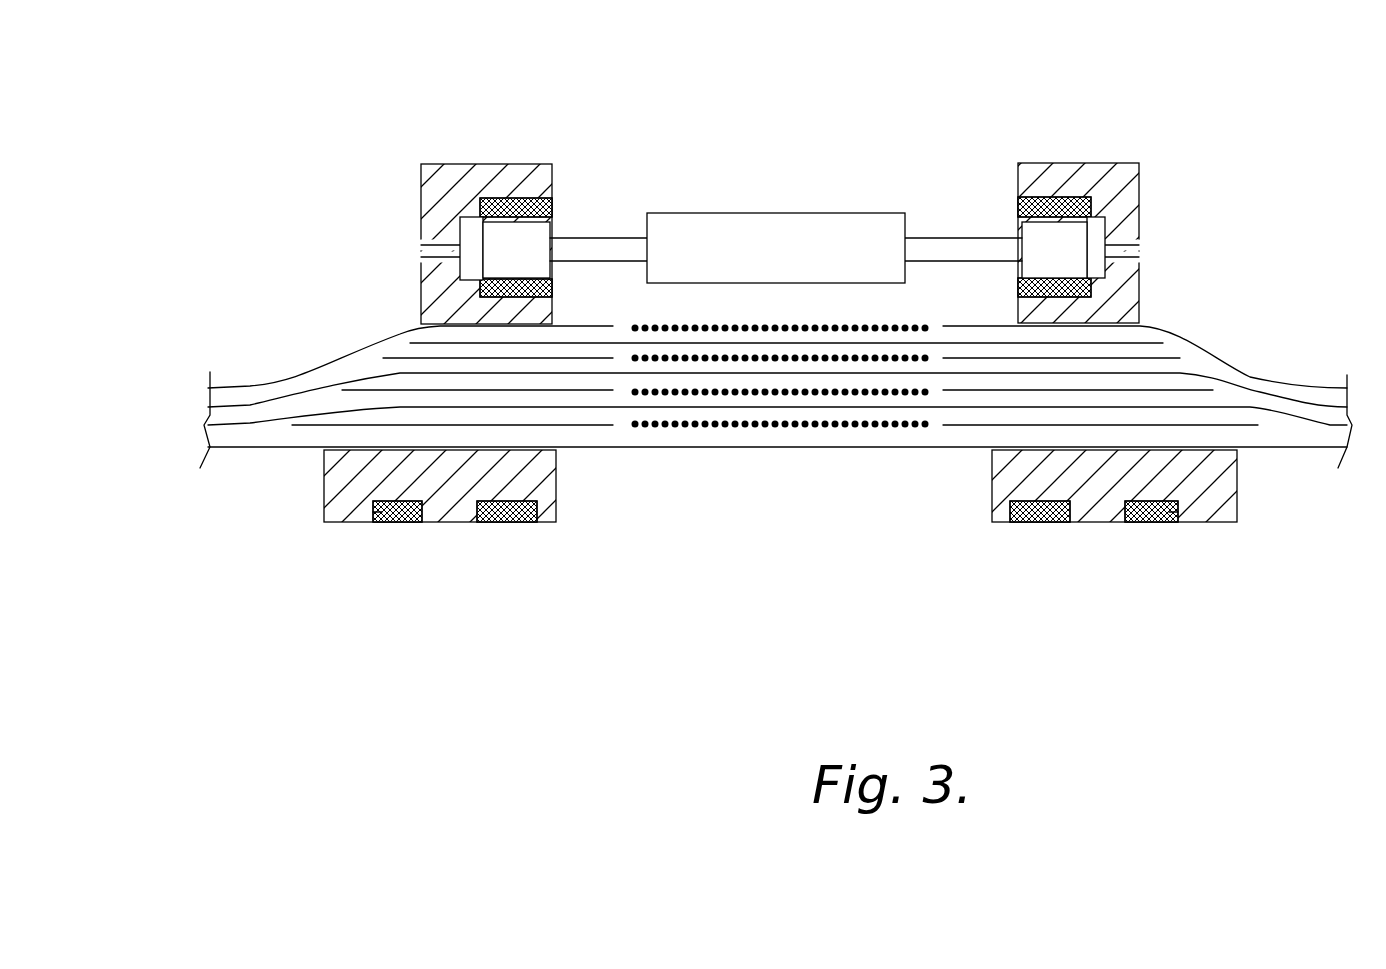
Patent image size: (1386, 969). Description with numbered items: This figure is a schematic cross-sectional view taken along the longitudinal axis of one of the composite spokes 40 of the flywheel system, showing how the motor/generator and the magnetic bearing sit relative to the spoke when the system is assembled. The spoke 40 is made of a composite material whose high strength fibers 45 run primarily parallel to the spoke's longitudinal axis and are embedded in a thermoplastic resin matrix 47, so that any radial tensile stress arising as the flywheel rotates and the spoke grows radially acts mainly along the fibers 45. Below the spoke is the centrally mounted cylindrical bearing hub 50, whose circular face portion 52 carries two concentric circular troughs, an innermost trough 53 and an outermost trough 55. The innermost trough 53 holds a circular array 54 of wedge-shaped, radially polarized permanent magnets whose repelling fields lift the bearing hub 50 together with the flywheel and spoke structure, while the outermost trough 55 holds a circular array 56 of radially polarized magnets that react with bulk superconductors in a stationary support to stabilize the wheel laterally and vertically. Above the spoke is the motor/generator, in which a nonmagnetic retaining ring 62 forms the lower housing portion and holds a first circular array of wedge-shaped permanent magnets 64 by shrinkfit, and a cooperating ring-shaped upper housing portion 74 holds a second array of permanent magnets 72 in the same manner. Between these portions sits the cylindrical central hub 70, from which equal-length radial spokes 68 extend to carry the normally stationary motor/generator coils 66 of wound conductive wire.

The composite spoke 40 is at (803, 572).
The high strength fibers 45 is at (1223, 362).
The thermoplastic resin matrix 47 is at (362, 382).
The cylindrical bearing hub 50 is at (558, 490).
The circular face portion 52 is at (487, 562).
The innermost trough 53 is at (457, 522).
The innermost circular array of permanent magnets 54 is at (528, 524).
The outermost trough 55 is at (362, 516).
The outermost circular array of permanent magnets 56 is at (388, 524).
The retaining ring 62 is at (406, 196).
The first circular array of wedge-shaped permanent magnets 64 is at (478, 294).
The motor/generator coils 66 is at (527, 268).
The radial spokes 68 is at (600, 245).
The central hub 70 is at (780, 216).
The second circular array of wedge-shaped permanent magnets 72 is at (528, 200).
The upper housing portion 74 is at (432, 140).